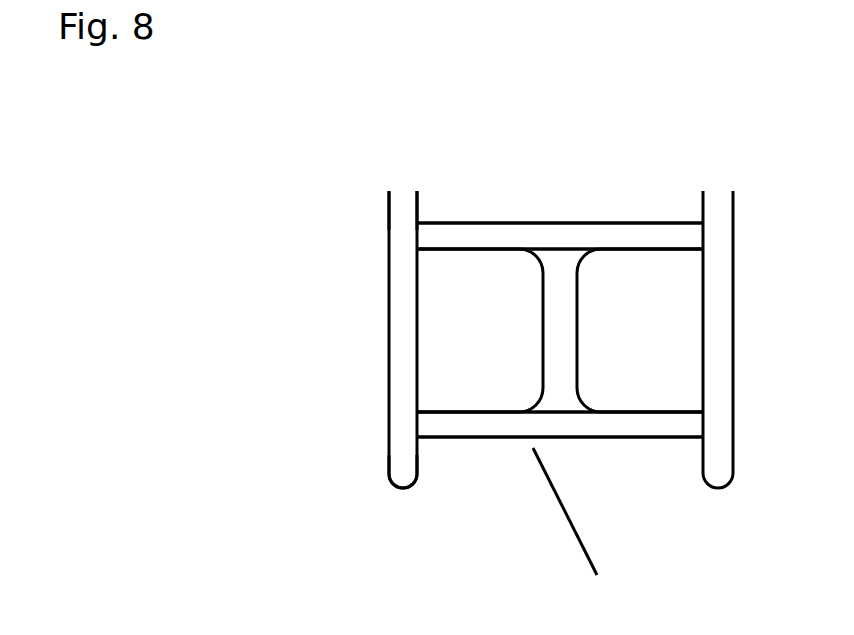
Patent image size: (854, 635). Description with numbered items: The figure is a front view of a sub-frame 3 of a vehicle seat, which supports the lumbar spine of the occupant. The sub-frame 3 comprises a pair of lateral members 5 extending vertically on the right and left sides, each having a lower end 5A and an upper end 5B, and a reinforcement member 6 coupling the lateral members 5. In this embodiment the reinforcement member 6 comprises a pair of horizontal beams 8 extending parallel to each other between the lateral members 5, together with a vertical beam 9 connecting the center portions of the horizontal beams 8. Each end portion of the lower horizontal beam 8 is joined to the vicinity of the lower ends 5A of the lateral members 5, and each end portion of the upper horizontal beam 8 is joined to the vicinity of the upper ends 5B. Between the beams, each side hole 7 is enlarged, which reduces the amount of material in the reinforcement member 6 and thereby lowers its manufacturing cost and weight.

The sub-frame 3 is at (573, 527).
The lateral member 5 is at (398, 348).
The lower end of lateral member 5A is at (386, 470).
The upper end of lateral member 5B is at (386, 228).
The reinforcement member 6 is at (566, 216).
The side hole 7 is at (662, 277).
The horizontal beam 8 is at (621, 238).
The vertical beam 9 is at (556, 322).